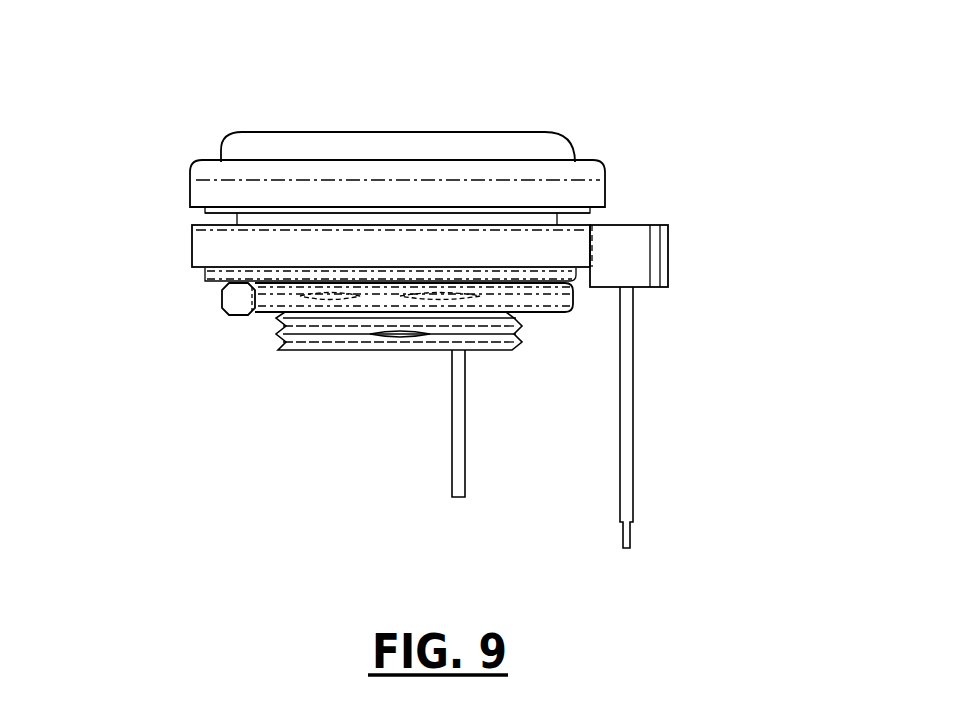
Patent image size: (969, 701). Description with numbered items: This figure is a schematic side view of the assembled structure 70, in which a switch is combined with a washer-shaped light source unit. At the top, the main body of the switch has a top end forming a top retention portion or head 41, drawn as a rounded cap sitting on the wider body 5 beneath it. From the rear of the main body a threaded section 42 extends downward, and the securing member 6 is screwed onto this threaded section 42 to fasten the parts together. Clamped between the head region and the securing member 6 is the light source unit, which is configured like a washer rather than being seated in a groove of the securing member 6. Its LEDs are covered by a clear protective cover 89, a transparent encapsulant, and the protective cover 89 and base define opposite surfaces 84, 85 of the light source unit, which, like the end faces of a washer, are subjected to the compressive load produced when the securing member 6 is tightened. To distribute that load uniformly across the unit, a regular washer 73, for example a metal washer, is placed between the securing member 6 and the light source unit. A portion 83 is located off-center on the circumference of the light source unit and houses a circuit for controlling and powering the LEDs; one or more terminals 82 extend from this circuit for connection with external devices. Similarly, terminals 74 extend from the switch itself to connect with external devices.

The head 41 is at (548, 138).
The housing body 5 is at (592, 185).
The opposite surface 84 is at (195, 222).
The protective cover 89 is at (205, 243).
The portion 83 is at (633, 253).
The opposite surface 85 is at (198, 272).
The regular washer 73 is at (578, 274).
The securing member 6 is at (231, 302).
The threaded section 42 is at (276, 346).
The terminals 74 is at (454, 459).
The terminals 82 is at (628, 450).
The structure 70 is at (788, 481).